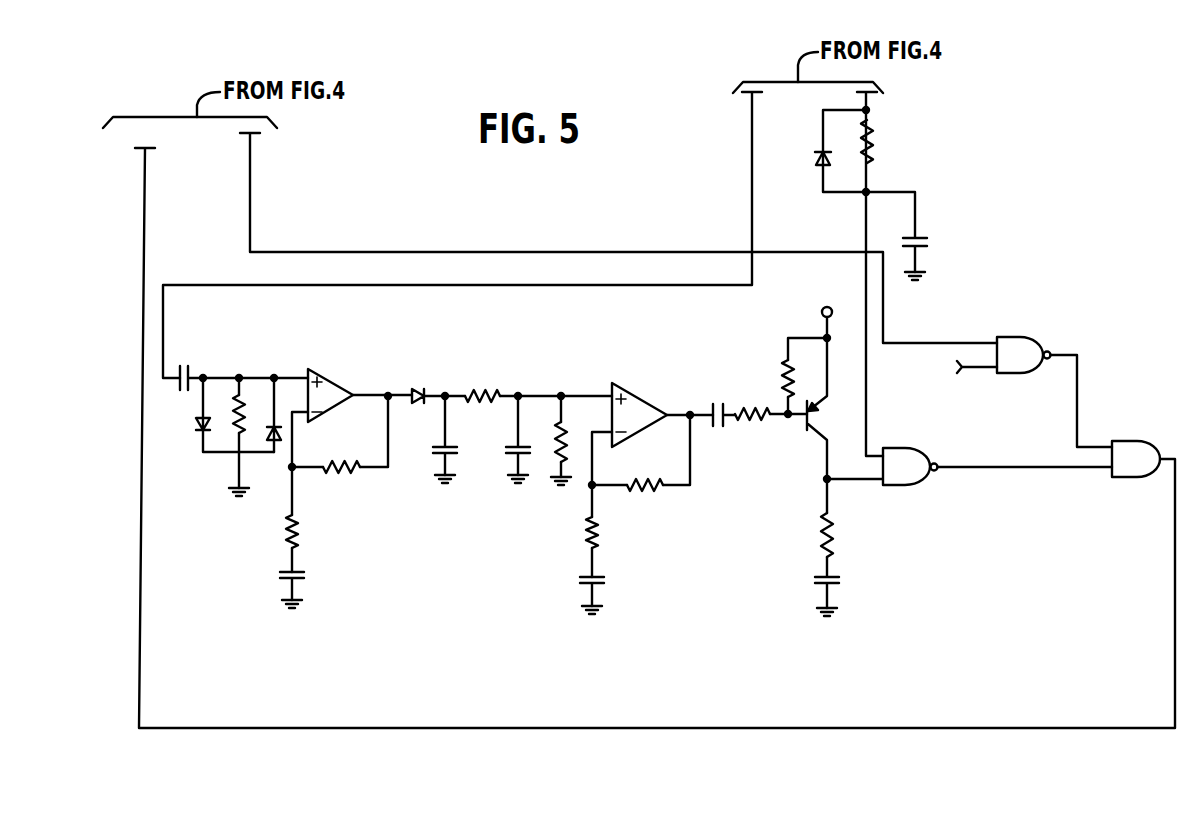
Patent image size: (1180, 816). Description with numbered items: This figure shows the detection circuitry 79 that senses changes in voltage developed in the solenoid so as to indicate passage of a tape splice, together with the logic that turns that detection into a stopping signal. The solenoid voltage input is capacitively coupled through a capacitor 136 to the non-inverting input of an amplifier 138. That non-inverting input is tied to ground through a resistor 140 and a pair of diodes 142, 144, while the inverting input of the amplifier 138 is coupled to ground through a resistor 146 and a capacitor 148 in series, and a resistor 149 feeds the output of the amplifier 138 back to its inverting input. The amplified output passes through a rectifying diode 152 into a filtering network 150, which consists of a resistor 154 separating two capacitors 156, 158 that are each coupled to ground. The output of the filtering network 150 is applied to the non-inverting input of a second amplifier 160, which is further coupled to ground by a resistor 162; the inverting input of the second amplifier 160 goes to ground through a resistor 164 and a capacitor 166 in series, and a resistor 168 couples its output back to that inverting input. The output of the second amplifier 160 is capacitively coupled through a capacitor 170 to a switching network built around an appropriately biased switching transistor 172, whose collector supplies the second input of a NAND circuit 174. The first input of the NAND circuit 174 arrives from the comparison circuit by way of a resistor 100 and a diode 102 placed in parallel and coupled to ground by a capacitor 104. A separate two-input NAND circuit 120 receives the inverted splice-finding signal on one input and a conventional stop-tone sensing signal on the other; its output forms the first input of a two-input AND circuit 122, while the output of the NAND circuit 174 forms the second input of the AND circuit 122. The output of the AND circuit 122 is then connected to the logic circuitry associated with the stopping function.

The detection circuitry 79 is at (448, 616).
The resistor 100 is at (878, 140).
The diode 102 is at (818, 158).
The capacitor 104 is at (920, 240).
The NAND circuit 120 is at (1012, 345).
The AND circuit 122 is at (1132, 445).
The capacitor 136 is at (185, 372).
The amplifier 138 is at (345, 388).
The resistor 140 is at (242, 393).
The diode 142 is at (200, 425).
The diode 144 is at (280, 445).
The resistor 146 is at (300, 525).
The capacitor 148 is at (302, 574).
The resistor 149 is at (345, 472).
The filtering network 150 is at (500, 522).
The rectifying diode 152 is at (418, 390).
The resistor 154 is at (482, 392).
The capacitor 156 is at (438, 446).
The capacitor 158 is at (510, 448).
The second amplifier 160 is at (640, 405).
The resistor 162 is at (566, 437).
The resistor 164 is at (628, 545).
The capacitor 166 is at (607, 575).
The resistor 168 is at (655, 490).
The capacitor 170 is at (722, 426).
The switching transistor 172 is at (855, 432).
The NAND circuit 174 is at (900, 486).